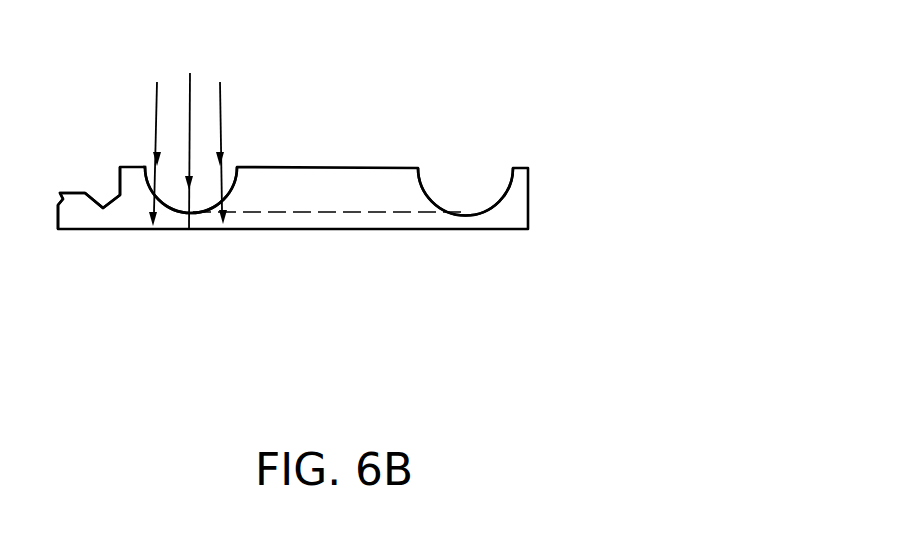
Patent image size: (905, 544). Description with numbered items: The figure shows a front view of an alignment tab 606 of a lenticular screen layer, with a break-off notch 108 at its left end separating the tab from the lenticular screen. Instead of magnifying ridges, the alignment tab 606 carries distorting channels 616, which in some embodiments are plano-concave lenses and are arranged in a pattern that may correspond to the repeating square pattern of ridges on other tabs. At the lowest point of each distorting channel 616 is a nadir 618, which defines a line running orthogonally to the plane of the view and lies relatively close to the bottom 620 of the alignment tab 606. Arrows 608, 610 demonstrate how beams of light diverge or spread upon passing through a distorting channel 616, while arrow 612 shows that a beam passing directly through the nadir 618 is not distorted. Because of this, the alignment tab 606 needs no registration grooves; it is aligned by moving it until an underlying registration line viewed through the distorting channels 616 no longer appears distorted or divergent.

The break-off notch 108 is at (103, 208).
The alignment tab 606 is at (634, 207).
The arrow 608 is at (220, 107).
The arrow 610 is at (157, 95).
The arrow 612 is at (190, 80).
The distorting channel 616 is at (237, 168).
The nadir 618 is at (470, 211).
The bottom 620 is at (508, 230).